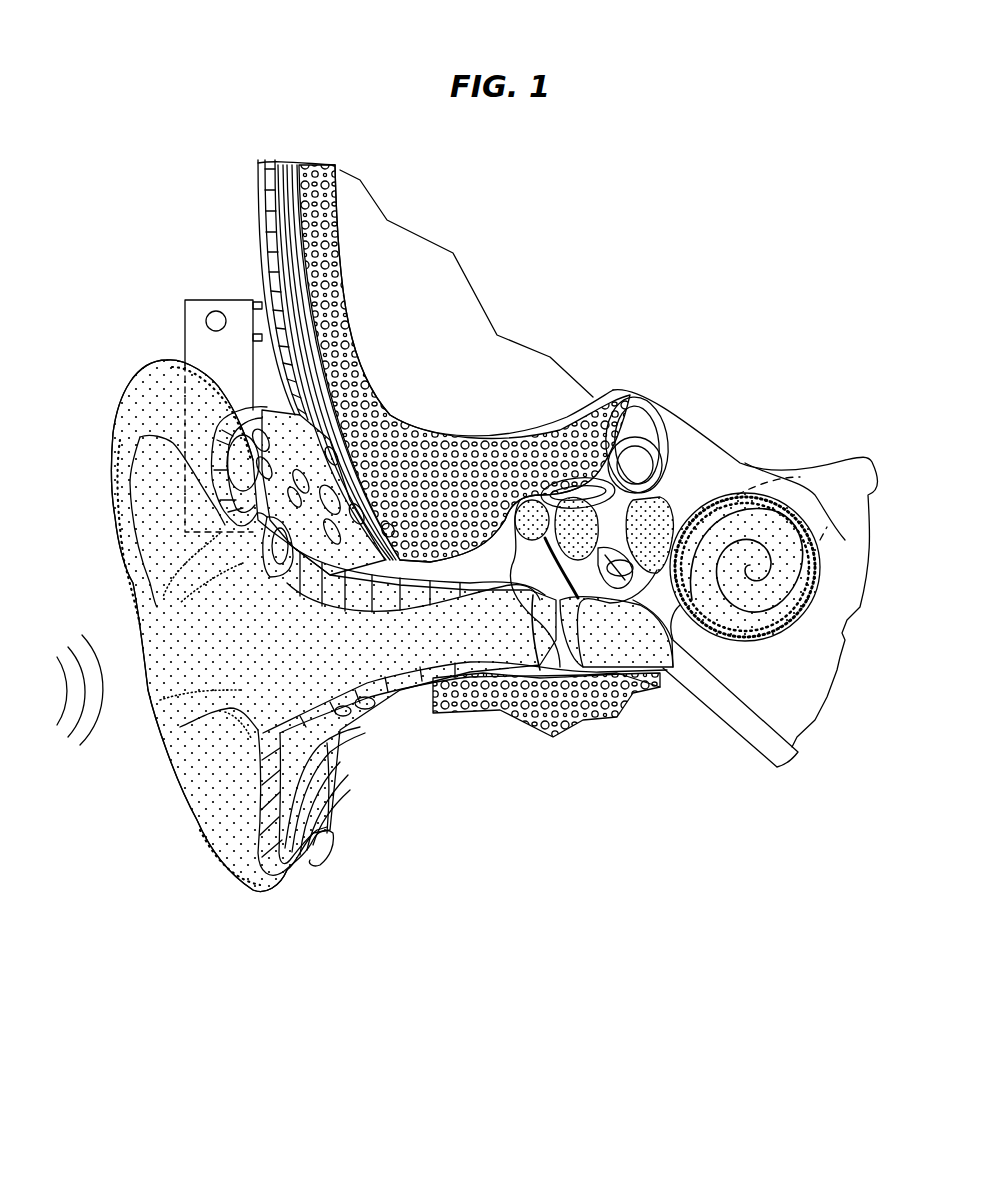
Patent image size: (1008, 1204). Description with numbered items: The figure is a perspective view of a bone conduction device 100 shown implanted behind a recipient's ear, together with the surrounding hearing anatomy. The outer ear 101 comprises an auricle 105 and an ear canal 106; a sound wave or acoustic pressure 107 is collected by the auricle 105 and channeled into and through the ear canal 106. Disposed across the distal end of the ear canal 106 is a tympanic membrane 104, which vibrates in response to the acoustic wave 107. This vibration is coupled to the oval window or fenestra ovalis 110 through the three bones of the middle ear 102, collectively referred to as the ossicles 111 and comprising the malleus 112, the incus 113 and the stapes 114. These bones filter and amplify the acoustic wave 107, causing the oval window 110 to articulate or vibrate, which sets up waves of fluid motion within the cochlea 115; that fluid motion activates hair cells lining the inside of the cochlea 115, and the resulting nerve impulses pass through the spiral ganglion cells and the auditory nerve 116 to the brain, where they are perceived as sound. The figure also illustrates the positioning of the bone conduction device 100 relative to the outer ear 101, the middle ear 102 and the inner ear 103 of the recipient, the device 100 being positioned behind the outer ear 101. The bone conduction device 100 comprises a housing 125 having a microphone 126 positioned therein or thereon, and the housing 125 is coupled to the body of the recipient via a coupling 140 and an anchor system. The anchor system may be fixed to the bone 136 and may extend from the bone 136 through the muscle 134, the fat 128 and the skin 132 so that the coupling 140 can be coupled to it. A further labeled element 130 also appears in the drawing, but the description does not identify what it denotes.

The bone conduction device 100 is at (144, 296).
The outer ear 101 is at (241, 908).
The middle ear 102 is at (634, 617).
The inner ear 103 is at (709, 640).
The tympanic membrane 104 is at (537, 627).
The auricle 105 is at (208, 835).
The ear canal 106 is at (380, 647).
The sound wave 107 is at (92, 653).
The oval window 110 is at (723, 503).
The ossicles 111 is at (636, 577).
The malleus 112 is at (545, 538).
The incus 113 is at (640, 547).
The stapes 114 is at (680, 563).
The cochlea 115 is at (747, 640).
The auditory nerve 116 is at (855, 475).
The housing 125 is at (197, 383).
The microphone 126 is at (216, 311).
The fat 128 is at (268, 163).
The vibration pathway 130 is at (277, 543).
The skin 132 is at (258, 170).
The muscle 134 is at (288, 165).
The bone 136 is at (318, 158).
The coupling 140 is at (258, 303).